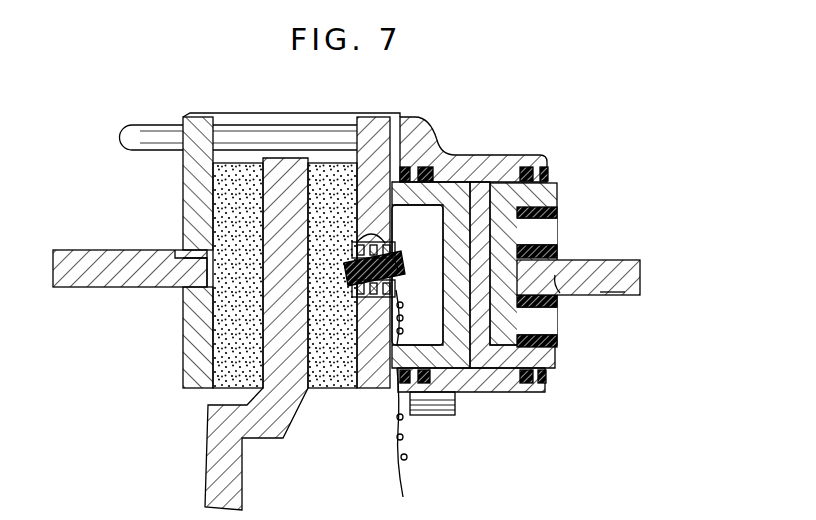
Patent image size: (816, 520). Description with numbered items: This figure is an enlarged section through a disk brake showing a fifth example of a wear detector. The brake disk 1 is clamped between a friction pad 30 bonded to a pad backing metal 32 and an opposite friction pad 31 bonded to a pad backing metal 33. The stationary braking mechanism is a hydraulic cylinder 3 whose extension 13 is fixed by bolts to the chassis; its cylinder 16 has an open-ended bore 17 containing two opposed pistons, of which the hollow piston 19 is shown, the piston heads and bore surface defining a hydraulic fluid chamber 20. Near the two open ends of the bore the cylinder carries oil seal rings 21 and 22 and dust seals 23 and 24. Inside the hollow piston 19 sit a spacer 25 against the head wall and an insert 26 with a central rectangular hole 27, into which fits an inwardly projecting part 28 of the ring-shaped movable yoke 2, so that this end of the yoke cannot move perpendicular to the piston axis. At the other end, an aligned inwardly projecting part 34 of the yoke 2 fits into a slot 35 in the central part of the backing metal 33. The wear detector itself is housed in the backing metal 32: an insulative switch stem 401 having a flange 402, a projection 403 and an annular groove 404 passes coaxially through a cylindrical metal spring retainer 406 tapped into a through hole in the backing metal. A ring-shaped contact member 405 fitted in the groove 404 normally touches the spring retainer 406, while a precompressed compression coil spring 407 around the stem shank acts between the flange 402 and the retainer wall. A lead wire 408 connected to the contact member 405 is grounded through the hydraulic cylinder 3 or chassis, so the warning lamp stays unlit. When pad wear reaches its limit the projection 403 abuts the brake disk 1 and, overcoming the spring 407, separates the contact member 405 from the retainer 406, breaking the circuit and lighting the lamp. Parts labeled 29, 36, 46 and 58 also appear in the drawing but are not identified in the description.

The brake disk 1 is at (268, 423).
The movable yoke 2 is at (632, 298).
The hydraulic cylinder 3 is at (509, 148).
The extension 13 is at (432, 410).
The cylinder 16 is at (477, 162).
The bore 17 is at (480, 190).
The piston 19 is at (557, 195).
The hydraulic fluid chamber 20 is at (468, 375).
The oil seal ring 21 is at (435, 168).
The oil seal ring 22 is at (530, 165).
The dust seal 23 is at (405, 167).
The dust seal 24 is at (548, 188).
The spacer 25 is at (508, 372).
The insert 26 is at (555, 213).
The rectangular hole 27 is at (553, 250).
The inwardly projecting part 28 is at (560, 293).
The shaft end portion 29 is at (600, 292).
The friction pad 30 is at (322, 392).
The friction pad 31 is at (223, 380).
The pad backing metal 32 is at (368, 392).
The pad backing metal 33 is at (192, 325).
The inwardly projecting part 34 is at (192, 268).
The slot 35 is at (173, 257).
The arm 36 is at (75, 255).
The rod 46 is at (282, 132).
The cover plate 58 is at (248, 118).
The switch stem 401 is at (362, 298).
The flange 402 is at (362, 250).
The projection 403 is at (355, 290).
The annular groove 404 is at (395, 278).
The contact member 405 is at (392, 262).
The spring retainer 406 is at (392, 240).
The compression coil spring 407 is at (373, 240).
The lead wire 408 is at (400, 478).